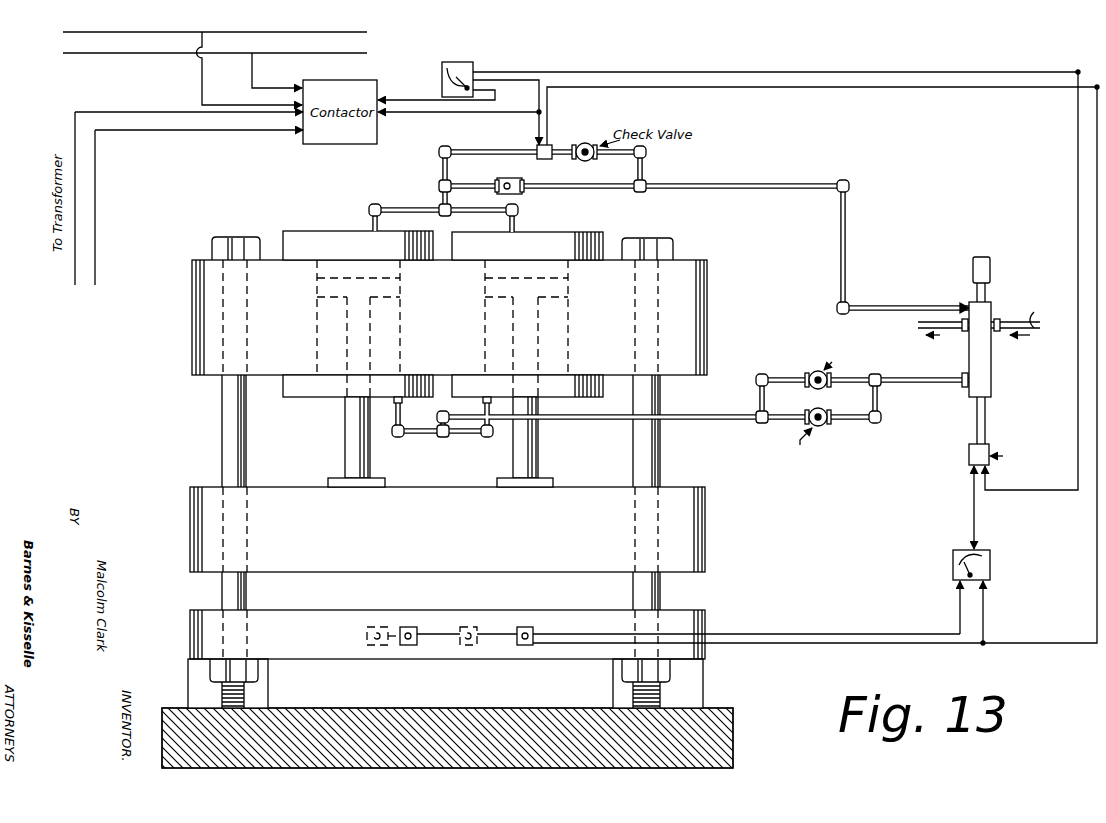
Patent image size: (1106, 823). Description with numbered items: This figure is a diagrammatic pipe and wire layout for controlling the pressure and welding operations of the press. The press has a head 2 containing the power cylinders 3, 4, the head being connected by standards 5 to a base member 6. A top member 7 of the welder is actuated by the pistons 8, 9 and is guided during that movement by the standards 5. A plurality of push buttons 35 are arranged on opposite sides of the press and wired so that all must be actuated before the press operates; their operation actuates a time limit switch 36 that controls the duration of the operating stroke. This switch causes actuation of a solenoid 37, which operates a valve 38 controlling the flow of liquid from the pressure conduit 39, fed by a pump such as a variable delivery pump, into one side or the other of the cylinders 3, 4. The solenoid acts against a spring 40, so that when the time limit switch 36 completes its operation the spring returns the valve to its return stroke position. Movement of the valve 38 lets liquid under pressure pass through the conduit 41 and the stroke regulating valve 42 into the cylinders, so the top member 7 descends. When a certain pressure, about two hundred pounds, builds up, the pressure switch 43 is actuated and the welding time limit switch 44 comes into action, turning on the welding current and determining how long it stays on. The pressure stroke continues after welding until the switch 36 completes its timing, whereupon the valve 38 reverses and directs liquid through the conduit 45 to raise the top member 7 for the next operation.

The head 2 is at (449, 317).
The power cylinder 3 is at (553, 242).
The power cylinder 4 is at (340, 236).
The standards 5 is at (222, 437).
The base member 6 is at (447, 646).
The top member 7 is at (690, 545).
The piston 8 is at (538, 449).
The piston 9 is at (370, 452).
The push buttons 35 is at (410, 625).
The time limit switch 36 is at (985, 553).
The solenoid 37 is at (968, 462).
The valve 38 is at (985, 357).
The pressure conduit 39 is at (997, 307).
The spring 40 is at (971, 272).
The conduit 41 is at (806, 185).
The stroke regulating valve 42 is at (527, 180).
The pressure switch 43 is at (537, 147).
The welding time limit switch 44 is at (472, 70).
The conduit 45 is at (726, 412).